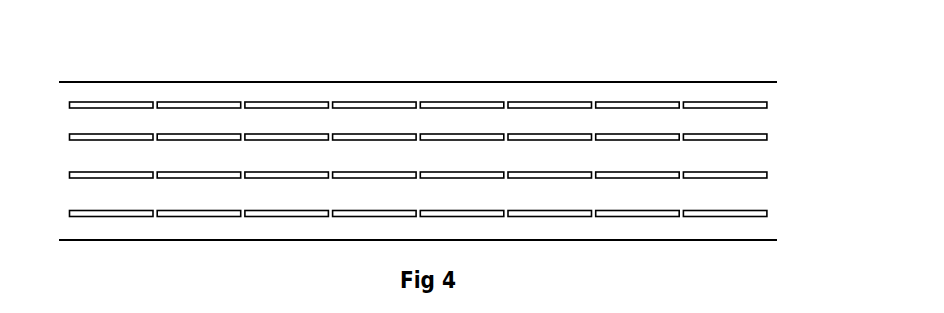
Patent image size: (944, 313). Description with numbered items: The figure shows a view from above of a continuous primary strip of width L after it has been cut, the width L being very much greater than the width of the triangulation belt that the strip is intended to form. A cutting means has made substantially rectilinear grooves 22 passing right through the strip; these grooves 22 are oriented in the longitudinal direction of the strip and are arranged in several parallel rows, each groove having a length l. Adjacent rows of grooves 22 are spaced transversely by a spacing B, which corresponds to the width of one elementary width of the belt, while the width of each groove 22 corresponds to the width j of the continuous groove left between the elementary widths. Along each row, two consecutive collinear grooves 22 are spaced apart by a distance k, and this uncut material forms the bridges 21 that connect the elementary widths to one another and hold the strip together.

The bridge 21 is at (243, 103).
The groove 22 is at (304, 103).
The spacing B is at (473, 83).
The width L is at (624, 265).
The width j is at (107, 238).
The distance k is at (158, 198).
The length l is at (330, 205).